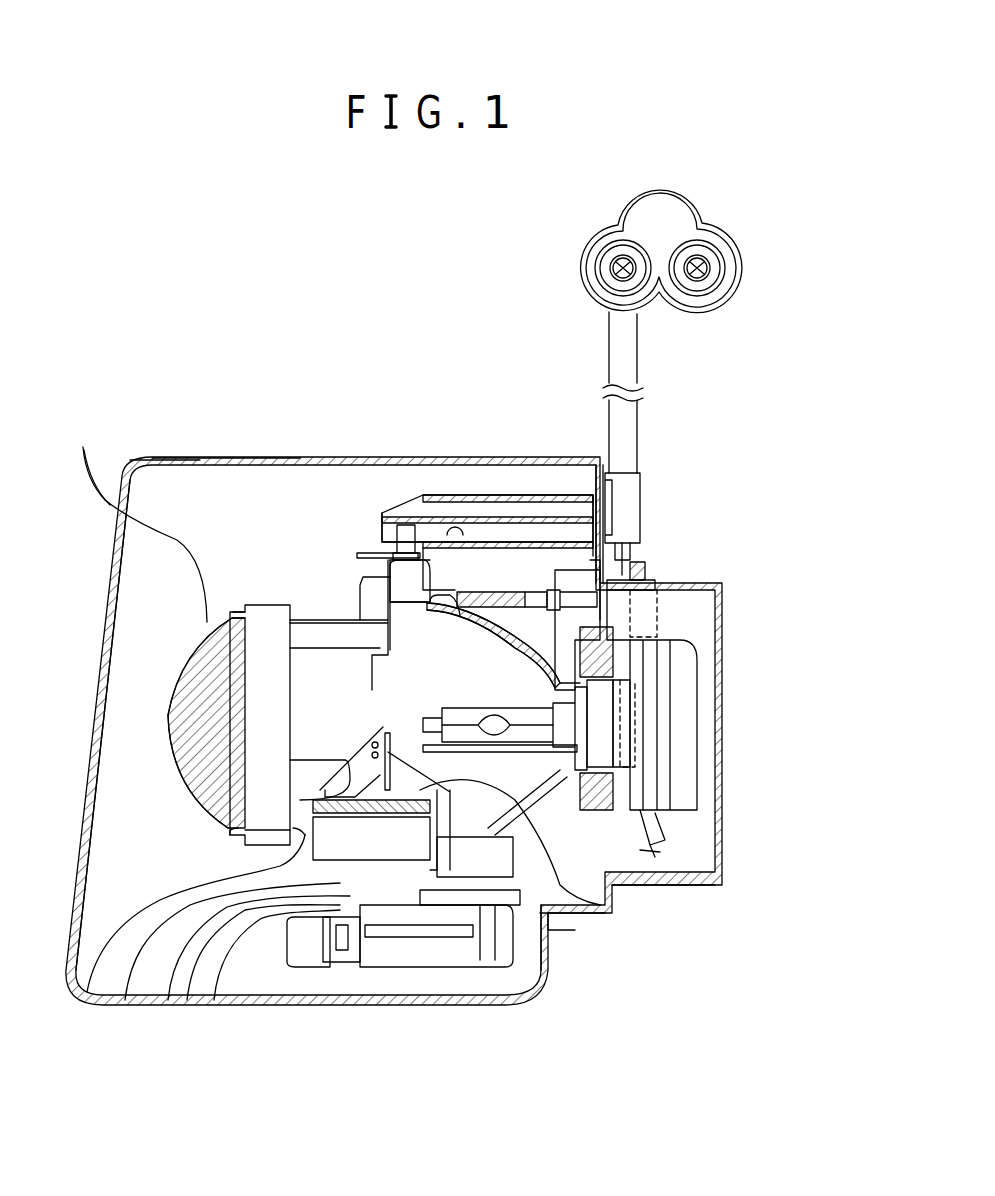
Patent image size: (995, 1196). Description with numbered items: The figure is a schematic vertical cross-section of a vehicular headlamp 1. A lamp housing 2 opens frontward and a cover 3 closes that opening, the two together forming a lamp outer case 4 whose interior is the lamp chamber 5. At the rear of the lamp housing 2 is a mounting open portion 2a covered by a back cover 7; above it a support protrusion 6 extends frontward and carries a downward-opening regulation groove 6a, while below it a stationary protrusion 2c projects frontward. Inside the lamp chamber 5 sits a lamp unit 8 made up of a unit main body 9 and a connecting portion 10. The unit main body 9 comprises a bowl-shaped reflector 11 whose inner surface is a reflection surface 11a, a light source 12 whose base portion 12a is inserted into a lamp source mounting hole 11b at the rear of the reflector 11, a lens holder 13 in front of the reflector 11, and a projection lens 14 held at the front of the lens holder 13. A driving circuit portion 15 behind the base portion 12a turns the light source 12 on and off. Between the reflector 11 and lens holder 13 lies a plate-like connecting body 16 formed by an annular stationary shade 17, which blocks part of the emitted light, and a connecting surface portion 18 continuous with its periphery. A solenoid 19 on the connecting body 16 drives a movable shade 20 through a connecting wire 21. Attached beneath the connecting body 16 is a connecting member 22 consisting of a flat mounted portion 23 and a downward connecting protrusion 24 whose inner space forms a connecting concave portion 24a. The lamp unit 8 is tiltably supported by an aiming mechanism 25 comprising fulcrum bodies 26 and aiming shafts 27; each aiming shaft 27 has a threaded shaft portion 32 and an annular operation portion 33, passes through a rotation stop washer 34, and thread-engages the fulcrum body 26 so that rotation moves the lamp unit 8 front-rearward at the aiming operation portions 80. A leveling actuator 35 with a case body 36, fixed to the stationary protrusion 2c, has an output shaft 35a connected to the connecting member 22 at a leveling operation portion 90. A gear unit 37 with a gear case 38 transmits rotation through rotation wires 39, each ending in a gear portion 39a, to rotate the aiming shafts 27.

The vehicular headlamp 1 is at (140, 320).
The lamp housing 2 is at (290, 457).
The mounting open portion 2a is at (650, 612).
The stationary protrusion 2c is at (545, 935).
The cover 3 is at (228, 457).
The lamp outer case 4 is at (298, 381).
The lamp chamber 5 is at (157, 628).
The support protrusion 6 is at (452, 497).
The regulation groove 6a is at (470, 600).
The back cover 7 is at (681, 885).
The lamp unit 8 is at (290, 615).
The unit main body 9 is at (370, 687).
The connecting portion 10 is at (400, 520).
The reflector 11 is at (562, 600).
The reflection surface 11a is at (580, 605).
The lamp source mounting hole 11b is at (600, 708).
The light source 12 is at (498, 585).
The base portion 12a is at (620, 740).
The lens holder 13 is at (258, 607).
The projection lens 14 is at (92, 462).
The driving circuit portion 15 is at (700, 674).
The connecting body 16 is at (412, 590).
The stationary shade 17 is at (390, 525).
The connecting surface portion 18 is at (398, 553).
The solenoid 19 is at (125, 1003).
The movable shade 20 is at (88, 995).
The connecting wire 21 is at (605, 915).
The connecting member 22 is at (168, 1003).
The mounted portion 23 is at (520, 880).
The connecting protrusion 24 is at (187, 1003).
The connecting concave portion 24a is at (214, 1003).
The aiming mechanism 25 is at (596, 590).
The fulcrum body 26 is at (505, 600).
The aiming shaft 27 is at (605, 480).
The shaft portion 32 is at (545, 600).
The operation portion 33 is at (648, 578).
The rotation stop washer 34 is at (630, 530).
The leveling actuator 35 is at (362, 935).
The output shaft 35a is at (345, 968).
The case body 36 is at (390, 978).
The gear unit 37 is at (674, 193).
The gear case 38 is at (690, 189).
The rotation wire 39 is at (650, 350).
The gear portion 39a is at (632, 562).
The aiming operation portion 80 is at (493, 707).
The leveling operation portion 90 is at (413, 955).